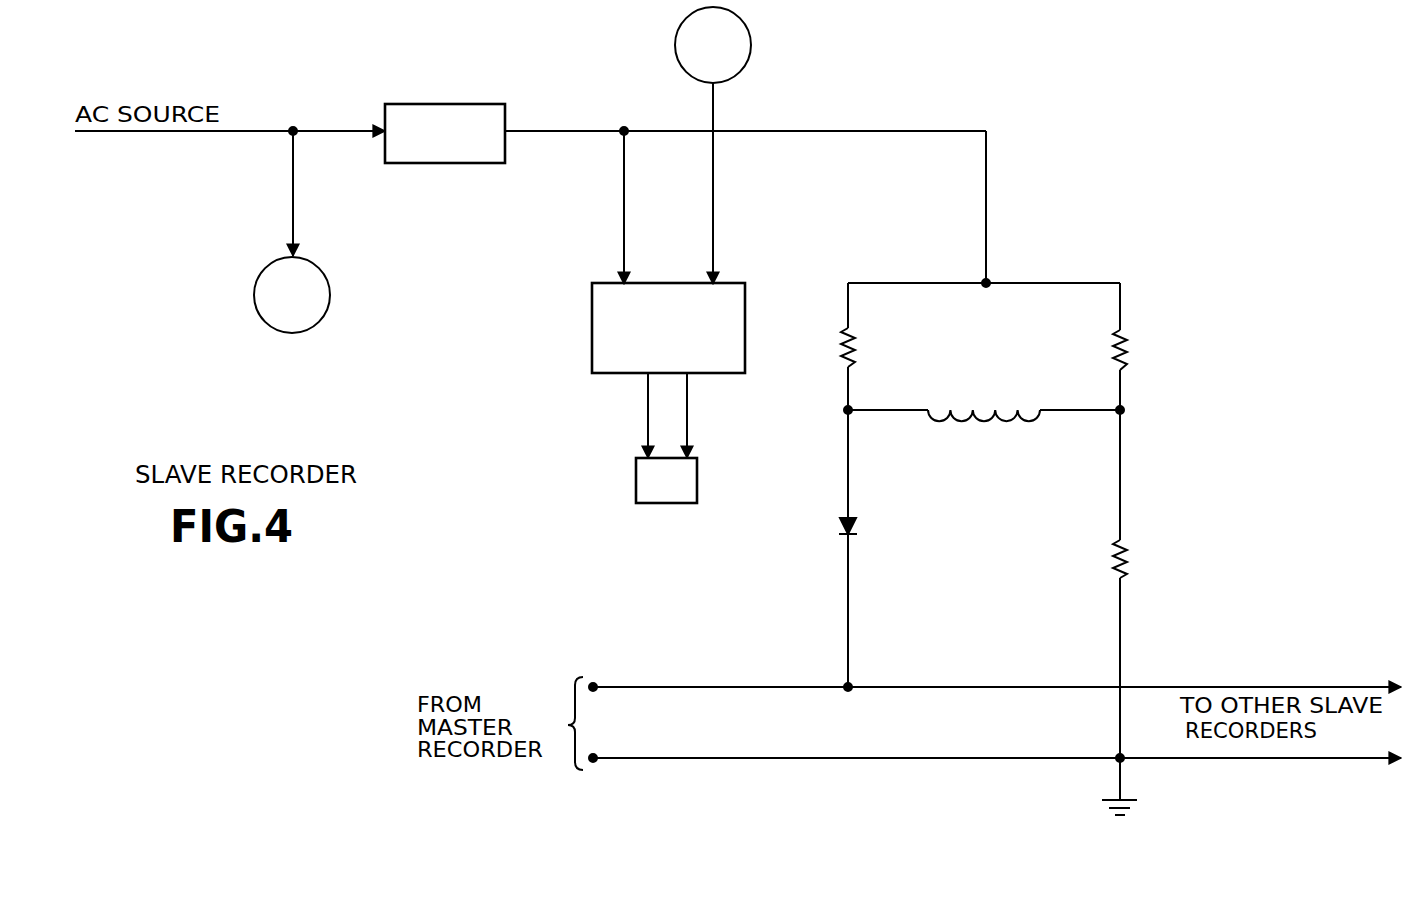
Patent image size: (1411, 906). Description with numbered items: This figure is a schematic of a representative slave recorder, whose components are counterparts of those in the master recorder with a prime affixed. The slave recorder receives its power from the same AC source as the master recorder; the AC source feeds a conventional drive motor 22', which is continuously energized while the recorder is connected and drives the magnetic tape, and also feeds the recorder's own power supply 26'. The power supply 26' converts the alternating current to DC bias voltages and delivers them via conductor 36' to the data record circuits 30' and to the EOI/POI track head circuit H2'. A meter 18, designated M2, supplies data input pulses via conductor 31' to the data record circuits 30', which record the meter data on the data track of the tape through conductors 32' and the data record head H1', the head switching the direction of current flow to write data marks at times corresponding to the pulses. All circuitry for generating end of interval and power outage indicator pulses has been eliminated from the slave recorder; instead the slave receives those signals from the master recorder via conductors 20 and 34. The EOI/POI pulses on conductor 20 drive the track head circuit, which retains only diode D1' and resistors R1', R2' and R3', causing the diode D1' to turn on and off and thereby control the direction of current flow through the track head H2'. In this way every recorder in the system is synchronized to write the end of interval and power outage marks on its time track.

The meter 18 is at (752, 43).
The conductor 20 is at (740, 690).
The drive motor 22' is at (317, 232).
The power supply 26' is at (455, 112).
The data record circuits 30' is at (698, 301).
The conductor 31' is at (749, 183).
The conductors 32' is at (671, 415).
The conductor 34 is at (753, 760).
The conductor 36' is at (747, 189).
The data record head H1' is at (666, 480).
The EOI/POI track head H2' is at (984, 541).
The resistor R1' is at (824, 346).
The resistor R2' is at (1155, 350).
The resistor R3' is at (1154, 559).
The diode D1' is at (880, 524).